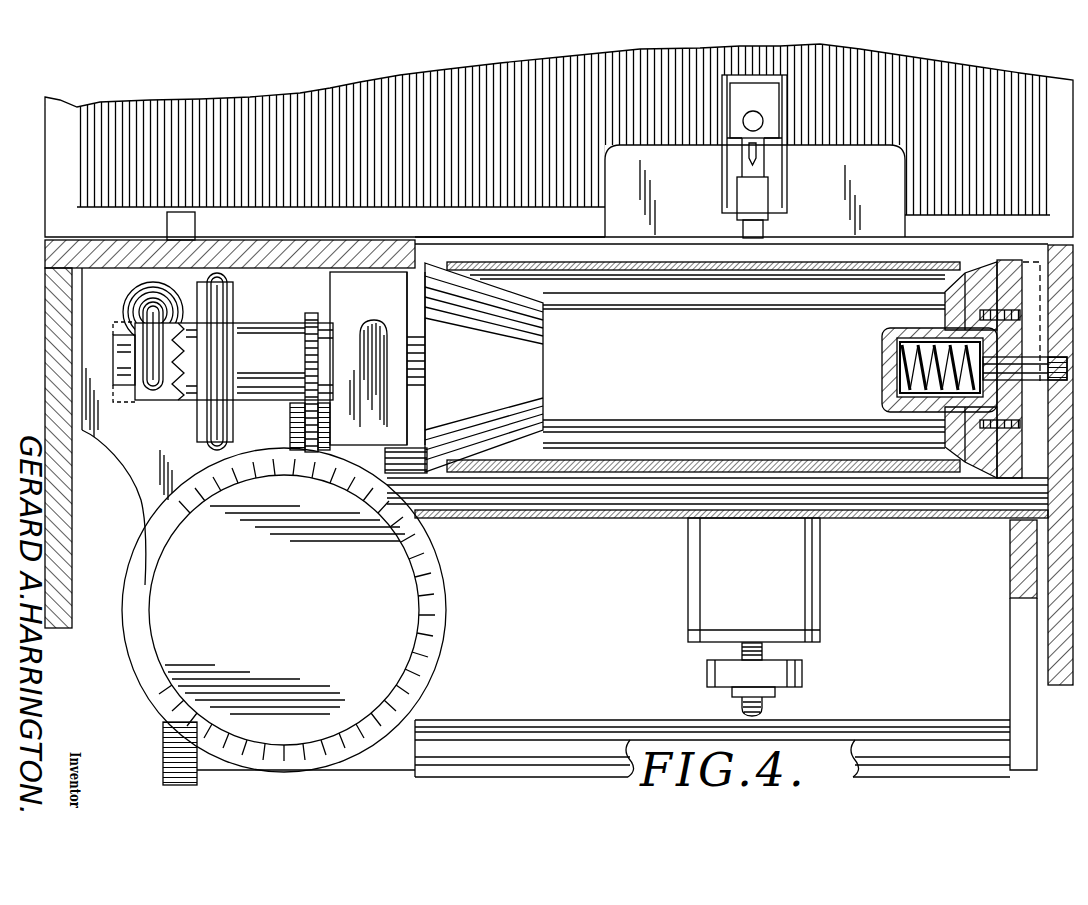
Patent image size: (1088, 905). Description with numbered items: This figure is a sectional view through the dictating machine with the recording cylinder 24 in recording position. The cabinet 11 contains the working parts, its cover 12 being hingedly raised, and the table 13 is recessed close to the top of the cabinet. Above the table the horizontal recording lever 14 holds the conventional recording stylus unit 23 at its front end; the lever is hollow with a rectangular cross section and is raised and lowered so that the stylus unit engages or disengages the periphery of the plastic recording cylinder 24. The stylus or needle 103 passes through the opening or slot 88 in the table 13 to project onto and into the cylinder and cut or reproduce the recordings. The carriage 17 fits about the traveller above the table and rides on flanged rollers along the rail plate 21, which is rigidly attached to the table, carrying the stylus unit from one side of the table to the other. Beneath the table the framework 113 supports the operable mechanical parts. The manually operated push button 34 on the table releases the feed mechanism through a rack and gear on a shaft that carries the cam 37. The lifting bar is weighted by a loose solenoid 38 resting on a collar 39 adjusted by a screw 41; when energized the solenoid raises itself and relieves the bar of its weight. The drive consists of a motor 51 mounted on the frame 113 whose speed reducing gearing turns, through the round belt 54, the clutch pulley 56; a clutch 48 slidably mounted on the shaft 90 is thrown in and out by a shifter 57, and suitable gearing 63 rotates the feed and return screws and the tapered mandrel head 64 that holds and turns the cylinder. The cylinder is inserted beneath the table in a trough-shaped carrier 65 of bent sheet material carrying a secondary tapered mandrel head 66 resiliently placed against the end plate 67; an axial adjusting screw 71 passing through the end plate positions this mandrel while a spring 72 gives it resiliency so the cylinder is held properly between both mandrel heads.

The cabinet 11 is at (44, 303).
The cover 12 is at (45, 175).
The table 13 is at (45, 248).
The recording lever 14 is at (775, 78).
The carriage 17 is at (897, 232).
The rail plate 21 is at (423, 245).
The recording stylus unit 23 is at (740, 92).
The recording cylinder 24 is at (717, 383).
The push button 34 is at (167, 224).
The cam 37 is at (918, 723).
The solenoid 38 is at (812, 583).
The collar 39 is at (802, 676).
The screw 41 is at (767, 708).
The clutch 48 is at (180, 393).
The motor 51 is at (284, 610).
The round belt 54 is at (217, 425).
The clutch pulley 56 is at (234, 361).
The shifter 57 is at (143, 312).
The gearing 63 is at (312, 313).
The tapered mandrel head 64 is at (484, 367).
The carrier 65 is at (596, 520).
The secondary tapered mandrel head 66 is at (946, 315).
The end plate 67 is at (1053, 404).
The axial adjusting screw 71 is at (1025, 369).
The spring 72 is at (884, 360).
The slot 88 is at (731, 253).
The shaft 90 is at (124, 362).
The stylus 103 is at (757, 163).
The framework 113 is at (140, 490).